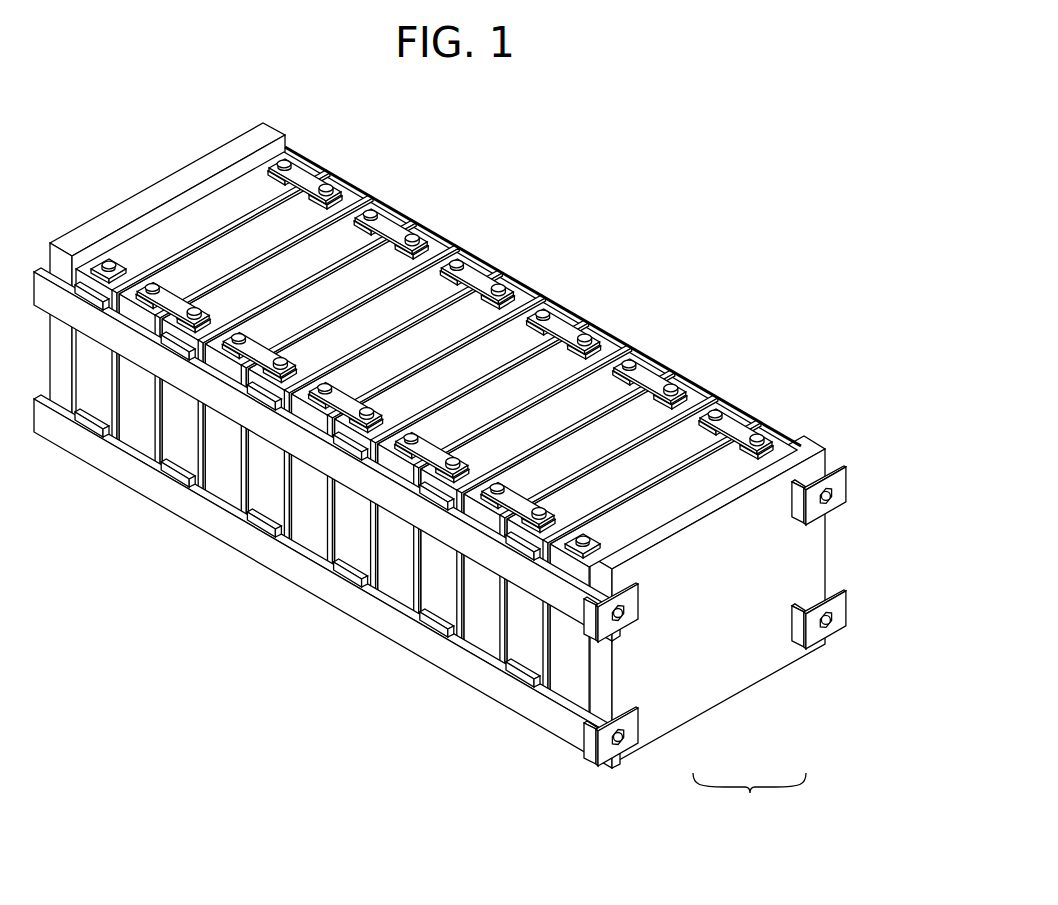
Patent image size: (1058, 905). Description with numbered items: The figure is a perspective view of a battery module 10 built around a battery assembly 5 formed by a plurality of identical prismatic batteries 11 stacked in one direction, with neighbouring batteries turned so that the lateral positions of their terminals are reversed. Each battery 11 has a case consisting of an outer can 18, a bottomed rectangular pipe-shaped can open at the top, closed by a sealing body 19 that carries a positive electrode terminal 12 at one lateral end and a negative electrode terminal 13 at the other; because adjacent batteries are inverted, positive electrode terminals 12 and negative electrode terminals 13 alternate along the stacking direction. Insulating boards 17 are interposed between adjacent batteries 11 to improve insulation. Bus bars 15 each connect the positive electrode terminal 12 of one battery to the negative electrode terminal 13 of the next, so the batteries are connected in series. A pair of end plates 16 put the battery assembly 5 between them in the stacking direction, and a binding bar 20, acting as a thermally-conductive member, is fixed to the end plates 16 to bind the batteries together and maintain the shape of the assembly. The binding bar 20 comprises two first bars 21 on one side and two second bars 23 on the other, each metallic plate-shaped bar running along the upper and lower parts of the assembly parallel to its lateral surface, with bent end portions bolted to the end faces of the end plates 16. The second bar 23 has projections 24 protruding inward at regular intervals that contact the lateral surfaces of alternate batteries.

The battery assembly 5 is at (600, 322).
The battery module 10 is at (720, 194).
The battery 11 is at (657, 340).
The positive electrode terminal 12 is at (441, 227).
The negative electrode terminal 13 is at (187, 383).
The bus bar 15 is at (395, 222).
The end plate 16 is at (160, 186).
The insulating board 17 is at (545, 660).
The outer can 18 is at (188, 458).
The sealing body 19 is at (344, 278).
The binding bar 20 is at (749, 797).
The first bar 21 is at (838, 614).
The second bar 23 is at (376, 613).
The projection 24 is at (343, 578).